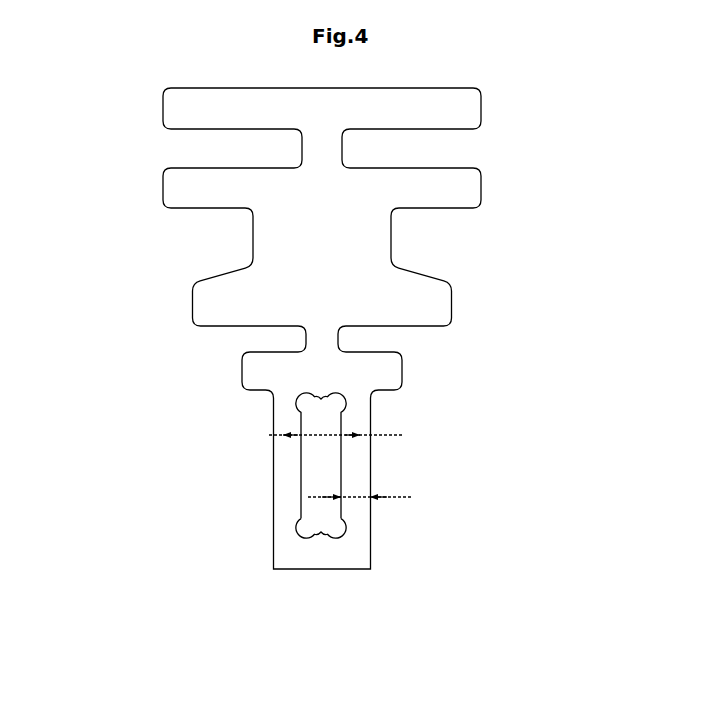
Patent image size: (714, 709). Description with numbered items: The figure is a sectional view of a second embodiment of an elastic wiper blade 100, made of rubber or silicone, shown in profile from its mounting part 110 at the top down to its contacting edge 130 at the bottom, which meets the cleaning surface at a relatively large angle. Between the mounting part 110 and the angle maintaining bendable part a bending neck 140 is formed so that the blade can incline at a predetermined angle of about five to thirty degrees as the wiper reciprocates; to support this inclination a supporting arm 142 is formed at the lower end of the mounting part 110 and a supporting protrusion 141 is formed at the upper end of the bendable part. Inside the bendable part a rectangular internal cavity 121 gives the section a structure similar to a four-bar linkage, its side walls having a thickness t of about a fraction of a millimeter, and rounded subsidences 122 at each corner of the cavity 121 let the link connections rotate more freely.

The wiper blade 100 is at (127, 138).
The mounting part 110 is at (470, 112).
The supporting arm 142 is at (439, 302).
The supporting protrusion 141 is at (403, 375).
The bending neck 140 is at (320, 347).
The contacting edge 130 is at (285, 557).
The internal cavity 121 is at (330, 475).
The rounded subsidences 122 is at (347, 533).